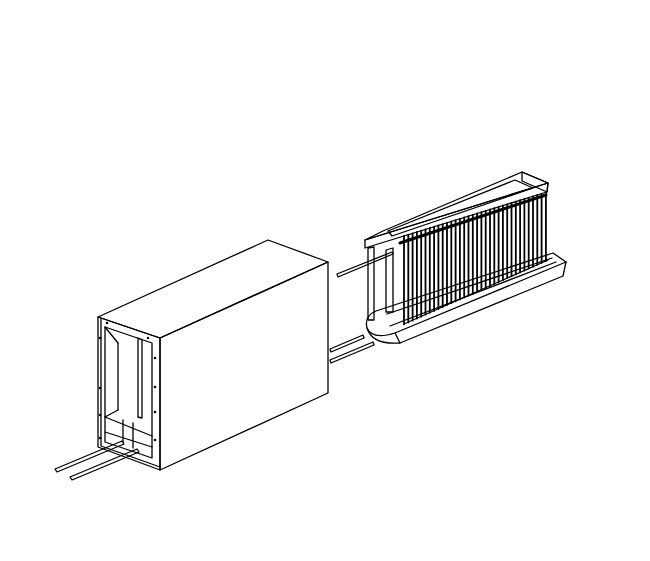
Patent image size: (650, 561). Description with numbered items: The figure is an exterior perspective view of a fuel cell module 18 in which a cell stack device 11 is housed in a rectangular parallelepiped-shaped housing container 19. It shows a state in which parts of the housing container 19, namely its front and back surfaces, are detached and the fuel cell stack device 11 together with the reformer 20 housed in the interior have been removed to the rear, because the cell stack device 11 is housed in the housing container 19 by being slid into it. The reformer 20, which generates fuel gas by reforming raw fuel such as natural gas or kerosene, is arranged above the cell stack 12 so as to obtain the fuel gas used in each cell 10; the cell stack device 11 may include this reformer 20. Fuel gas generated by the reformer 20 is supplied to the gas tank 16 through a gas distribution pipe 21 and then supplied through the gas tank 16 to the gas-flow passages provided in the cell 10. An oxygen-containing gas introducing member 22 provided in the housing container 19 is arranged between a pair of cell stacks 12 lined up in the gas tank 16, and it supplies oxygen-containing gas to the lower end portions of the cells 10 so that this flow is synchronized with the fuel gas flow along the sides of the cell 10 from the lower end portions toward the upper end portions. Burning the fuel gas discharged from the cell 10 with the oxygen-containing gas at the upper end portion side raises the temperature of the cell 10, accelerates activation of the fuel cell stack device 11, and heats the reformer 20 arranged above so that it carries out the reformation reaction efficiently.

The module 18 is at (176, 86).
The housing container 19 is at (215, 275).
The oxygen-containing gas introducing member 22 is at (145, 362).
The cell stack 12 is at (563, 283).
The gas distribution pipe 21 is at (363, 247).
The cell stack device 11 is at (485, 165).
The reformer 20 is at (372, 236).
The cell 10 is at (549, 200).
The gas tank 16 is at (403, 333).